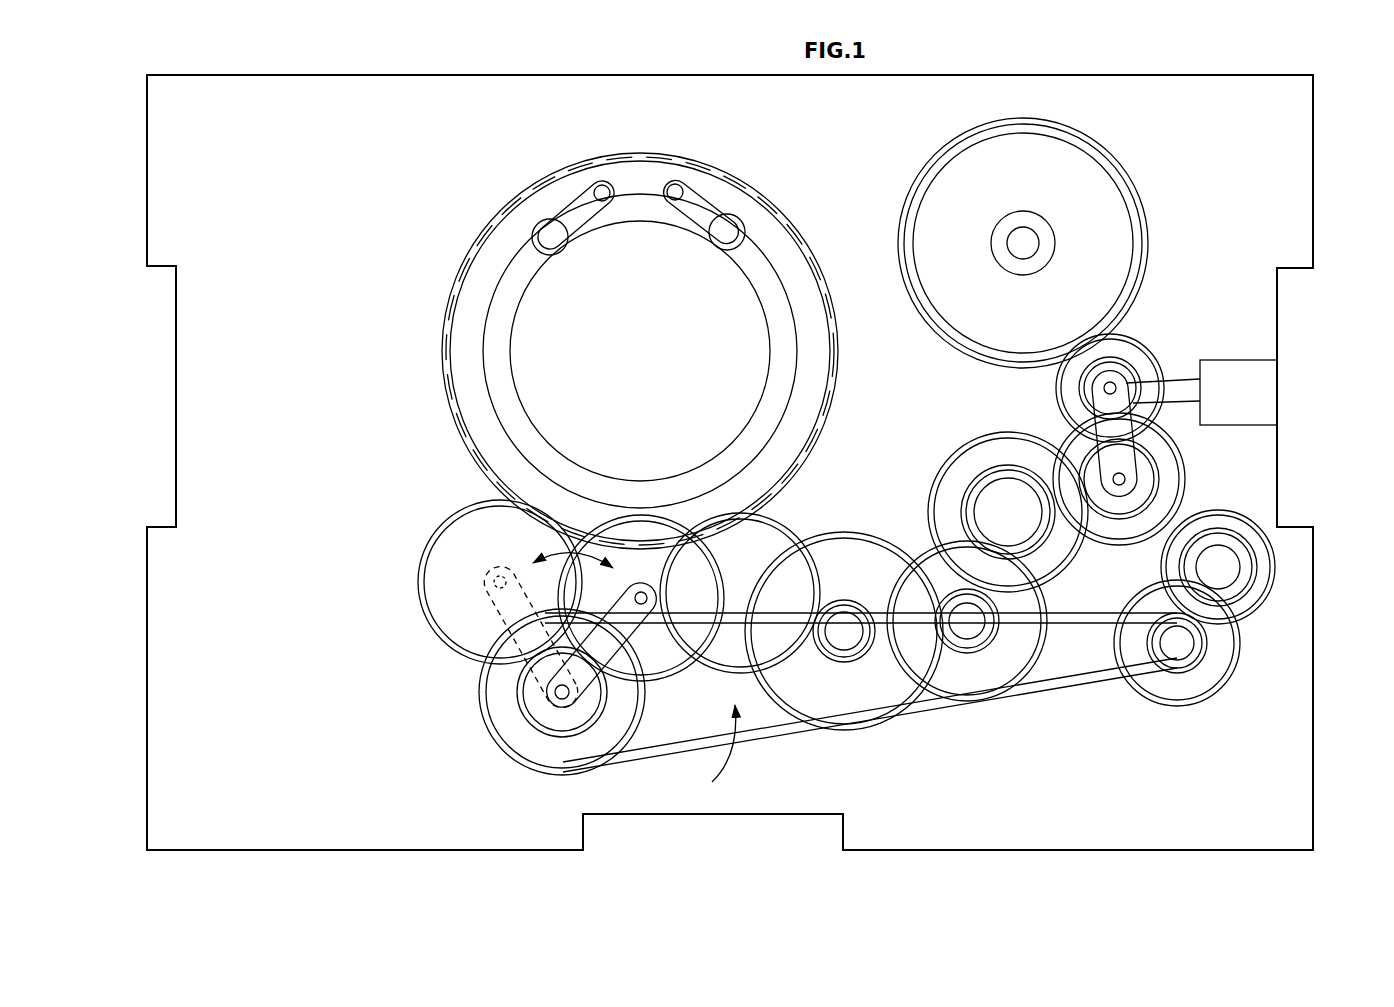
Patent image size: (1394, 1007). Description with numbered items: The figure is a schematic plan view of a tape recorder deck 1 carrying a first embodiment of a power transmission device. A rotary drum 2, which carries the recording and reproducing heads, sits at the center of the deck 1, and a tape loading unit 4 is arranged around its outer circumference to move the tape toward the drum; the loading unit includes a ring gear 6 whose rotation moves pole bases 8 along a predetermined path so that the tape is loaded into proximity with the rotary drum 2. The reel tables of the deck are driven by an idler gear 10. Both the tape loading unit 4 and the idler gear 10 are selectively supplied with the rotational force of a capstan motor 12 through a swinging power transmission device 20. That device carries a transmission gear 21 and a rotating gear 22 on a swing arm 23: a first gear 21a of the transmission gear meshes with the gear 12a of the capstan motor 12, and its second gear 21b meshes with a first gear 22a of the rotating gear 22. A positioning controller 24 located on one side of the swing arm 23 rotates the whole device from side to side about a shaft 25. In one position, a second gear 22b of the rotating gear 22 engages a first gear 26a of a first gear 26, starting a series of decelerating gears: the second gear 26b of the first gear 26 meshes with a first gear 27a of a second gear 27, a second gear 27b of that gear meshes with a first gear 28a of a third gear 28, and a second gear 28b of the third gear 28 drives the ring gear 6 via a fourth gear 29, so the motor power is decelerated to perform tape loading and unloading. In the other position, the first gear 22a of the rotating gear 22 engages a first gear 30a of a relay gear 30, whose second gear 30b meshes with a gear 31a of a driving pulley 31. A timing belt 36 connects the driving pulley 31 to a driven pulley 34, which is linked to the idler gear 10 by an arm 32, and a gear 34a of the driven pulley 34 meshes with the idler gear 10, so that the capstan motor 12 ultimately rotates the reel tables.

The deck 1 is at (180, 186).
The rotary drum 2 is at (512, 388).
The tape loading unit 4 is at (430, 338).
The ring gear 6 is at (801, 228).
The pole bases 8 is at (563, 210).
The idler gear 10 is at (633, 557).
The capstan motor 12 is at (1044, 242).
The gear of capstan motor 12a is at (1112, 165).
The power transmission device 20 is at (1113, 435).
The transmission gear 21 is at (1099, 359).
The first gear of transmission gear 21a is at (1150, 348).
The second gear of transmission gear 21b is at (1100, 355).
The rotating gear 22 is at (1155, 503).
The first gear of rotating gear 22a is at (1105, 545).
The second gear of rotating gear 22b is at (1167, 480).
The swing arm 23 is at (1140, 396).
The positioning controller 24 is at (1265, 386).
The shaft 25 is at (1113, 383).
The first gear 26 is at (970, 476).
The first gear of first gear 26a is at (962, 488).
The second gear of first gear 26b is at (985, 437).
The second gear 27 is at (998, 655).
The first gear of second gear 27a is at (1040, 670).
The second gear of second gear 27b is at (990, 653).
The third gear 28 is at (858, 628).
The first gear of third gear 28a is at (857, 542).
The second gear of third gear 28b is at (863, 664).
The fourth gear 29 is at (705, 754).
The relay gear 30 is at (1266, 571).
The first gear of relay gear 30a is at (1258, 533).
The second gear of relay gear 30b is at (1247, 613).
The driving pulley 31 is at (1203, 670).
The gear of driving pulley 31a is at (1180, 700).
The arm 32 is at (652, 666).
The driven pulley 34 is at (525, 712).
The gear of driven pulley 34a is at (565, 750).
The timing belt 36 is at (760, 738).